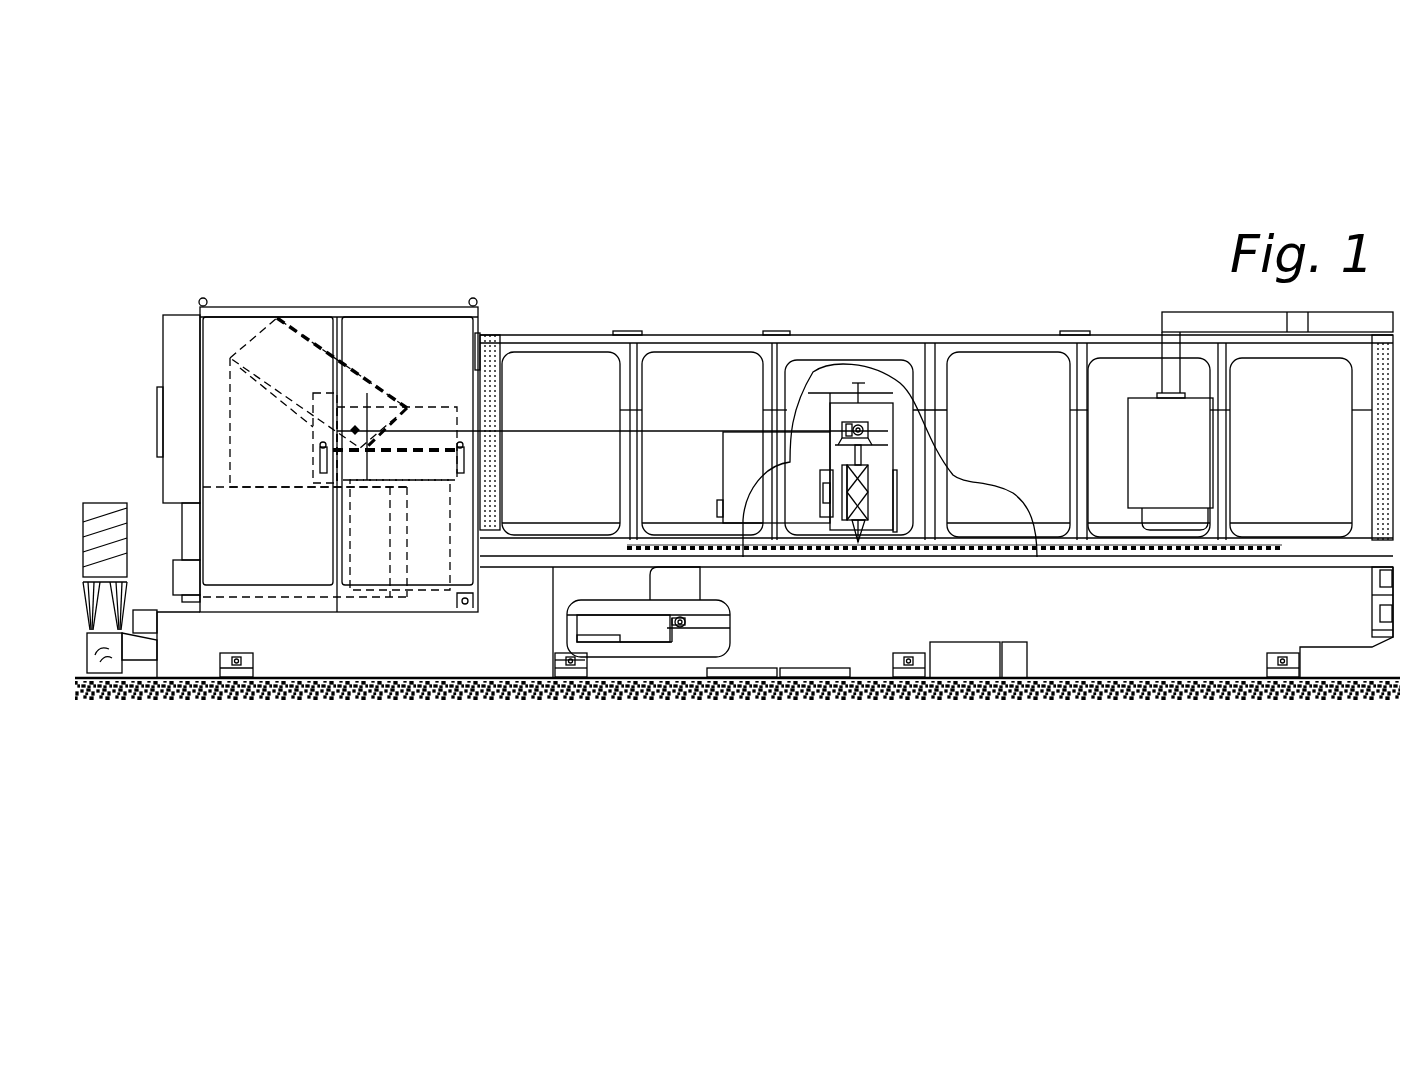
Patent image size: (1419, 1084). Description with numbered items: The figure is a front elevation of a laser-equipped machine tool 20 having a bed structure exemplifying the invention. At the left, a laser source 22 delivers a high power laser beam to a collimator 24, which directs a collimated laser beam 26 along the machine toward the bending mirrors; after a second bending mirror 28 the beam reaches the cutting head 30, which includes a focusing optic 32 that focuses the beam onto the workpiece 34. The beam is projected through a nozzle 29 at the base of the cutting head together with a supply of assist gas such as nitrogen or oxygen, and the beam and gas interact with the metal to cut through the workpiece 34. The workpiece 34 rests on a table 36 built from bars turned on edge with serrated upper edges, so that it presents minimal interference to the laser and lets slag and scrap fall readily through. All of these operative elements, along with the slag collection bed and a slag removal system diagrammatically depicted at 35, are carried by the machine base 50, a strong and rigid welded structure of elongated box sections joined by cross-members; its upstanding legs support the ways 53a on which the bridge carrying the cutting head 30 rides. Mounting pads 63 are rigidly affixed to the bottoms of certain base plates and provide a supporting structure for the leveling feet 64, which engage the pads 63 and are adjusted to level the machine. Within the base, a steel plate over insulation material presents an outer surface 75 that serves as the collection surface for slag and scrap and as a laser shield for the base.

The machine tool 20 is at (967, 270).
The laser source 22 is at (256, 338).
The collimator 24 is at (440, 406).
The collimated laser beam 26 is at (567, 428).
The second bending mirror 28 is at (866, 426).
The nozzle 29 is at (857, 524).
The cutting head 30 is at (835, 484).
The focusing optic 32 is at (870, 493).
The workpiece 34 is at (1037, 555).
The slag removal system 35 is at (608, 585).
The table 36 is at (1133, 548).
The machine base 50 is at (1085, 655).
The ways 53a is at (827, 474).
The mounting pads 63 is at (590, 655).
The leveling feet 64 is at (230, 685).
The outer surface 75 is at (718, 631).